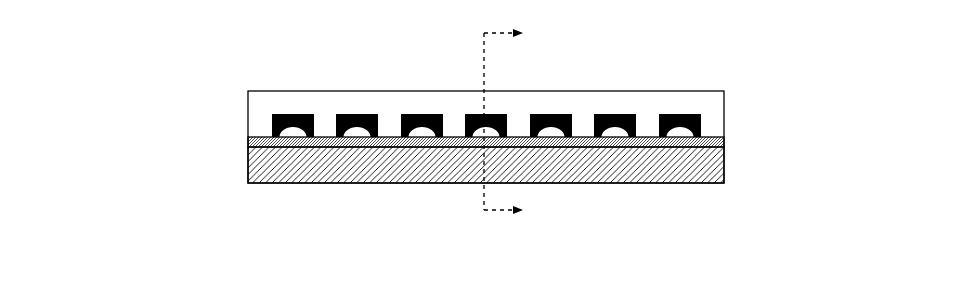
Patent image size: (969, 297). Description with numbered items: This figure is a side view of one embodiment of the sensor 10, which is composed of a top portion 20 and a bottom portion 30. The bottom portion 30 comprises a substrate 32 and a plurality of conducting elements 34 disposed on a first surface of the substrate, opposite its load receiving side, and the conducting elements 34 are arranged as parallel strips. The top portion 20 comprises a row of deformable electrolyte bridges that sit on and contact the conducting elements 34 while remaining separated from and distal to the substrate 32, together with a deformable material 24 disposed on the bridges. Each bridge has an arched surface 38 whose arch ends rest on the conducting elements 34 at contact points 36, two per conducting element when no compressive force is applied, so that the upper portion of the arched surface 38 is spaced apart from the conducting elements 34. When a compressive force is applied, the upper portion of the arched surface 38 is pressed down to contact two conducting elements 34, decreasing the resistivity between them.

The sensor 10 is at (272, 53).
The top portion 20 is at (232, 110).
The bottom portion 30 is at (738, 145).
The conducting elements 34 is at (258, 141).
The substrate 32 is at (260, 170).
The deformable material 24 is at (708, 113).
The arched surface 38 is at (353, 133).
The contact points 36 is at (608, 140).